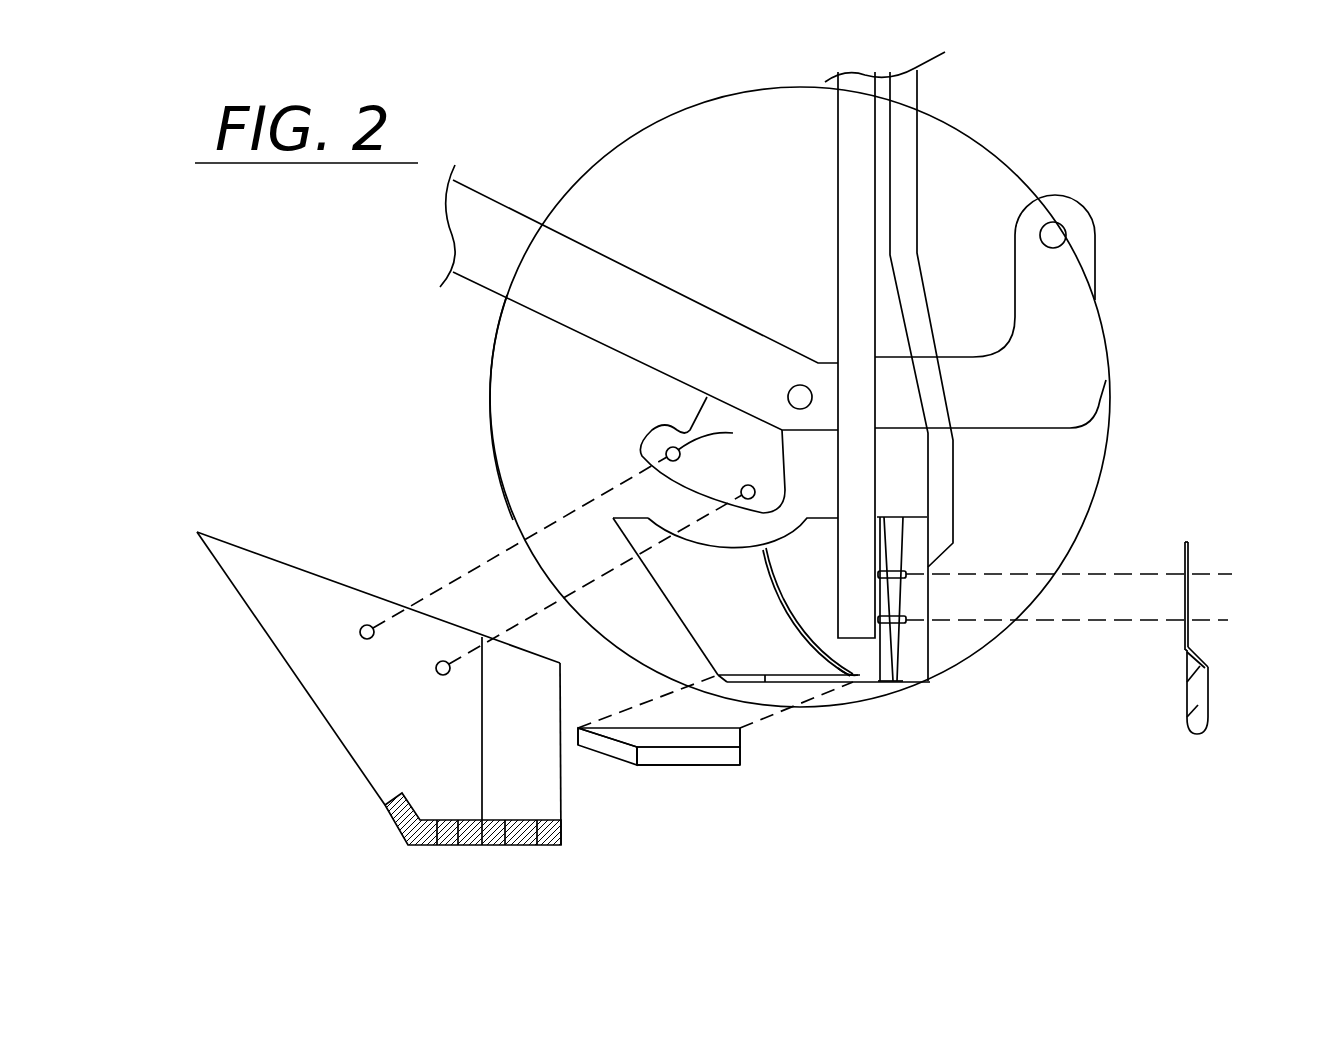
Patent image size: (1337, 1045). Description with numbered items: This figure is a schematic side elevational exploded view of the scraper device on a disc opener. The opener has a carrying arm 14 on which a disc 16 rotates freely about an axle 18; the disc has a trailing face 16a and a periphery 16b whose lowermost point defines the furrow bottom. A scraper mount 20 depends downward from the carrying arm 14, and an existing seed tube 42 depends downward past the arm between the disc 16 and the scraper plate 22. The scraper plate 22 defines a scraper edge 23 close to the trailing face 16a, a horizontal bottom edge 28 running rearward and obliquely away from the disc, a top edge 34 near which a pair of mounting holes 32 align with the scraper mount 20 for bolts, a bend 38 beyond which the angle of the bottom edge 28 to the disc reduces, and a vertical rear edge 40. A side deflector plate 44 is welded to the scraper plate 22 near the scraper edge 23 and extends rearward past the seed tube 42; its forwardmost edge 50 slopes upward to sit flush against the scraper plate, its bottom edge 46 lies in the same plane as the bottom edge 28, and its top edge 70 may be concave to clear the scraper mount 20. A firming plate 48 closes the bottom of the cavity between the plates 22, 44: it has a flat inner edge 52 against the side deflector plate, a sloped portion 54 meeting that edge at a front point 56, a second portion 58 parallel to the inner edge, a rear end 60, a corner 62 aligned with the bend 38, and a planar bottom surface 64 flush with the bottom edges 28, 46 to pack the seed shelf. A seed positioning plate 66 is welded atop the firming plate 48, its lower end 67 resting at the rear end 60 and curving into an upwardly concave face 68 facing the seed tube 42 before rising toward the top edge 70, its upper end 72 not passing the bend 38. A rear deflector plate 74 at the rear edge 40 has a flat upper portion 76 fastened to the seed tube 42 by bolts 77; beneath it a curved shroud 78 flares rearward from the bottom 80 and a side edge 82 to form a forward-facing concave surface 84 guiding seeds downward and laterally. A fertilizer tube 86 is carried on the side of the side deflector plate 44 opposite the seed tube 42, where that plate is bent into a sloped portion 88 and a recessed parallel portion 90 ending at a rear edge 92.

The carrying arm 14 is at (630, 304).
The disc 16 is at (637, 121).
The trailing face 16a is at (525, 390).
The disc periphery 16b is at (495, 480).
The axle 18 is at (792, 396).
The scraper mount 20 is at (713, 413).
The scraper plate 22 is at (306, 606).
The scraper edge 23 is at (300, 690).
The bottom edge 28 is at (467, 847).
The mounting holes 32 is at (440, 667).
The top edge 34 is at (746, 490).
The bend 38 is at (485, 760).
The rear edge 40 is at (565, 773).
The seed tube 42 is at (853, 192).
The side deflector plate 44 is at (697, 594).
The bottom edge of side deflector plate 46 is at (870, 687).
The firming plate 48 is at (694, 778).
The forwardmost edge 50 is at (630, 552).
The flat inner edge 52 is at (643, 727).
The sloped portion 54 is at (612, 748).
The point 56 is at (570, 730).
The second portion 58 is at (717, 765).
The rear end 60 is at (740, 733).
The corner 62 is at (653, 757).
The planar bottom surface 64 is at (667, 767).
The seed positioning plate 66 is at (775, 606).
The lower end 67 is at (888, 687).
The upwardly concave face 68 is at (852, 672).
The top edge of side deflector plate 70 is at (773, 537).
The upper end 72 is at (762, 532).
The rear deflector plate 74 is at (1229, 531).
The flat upper portion 76 is at (1192, 585).
The bolts 77 is at (907, 610).
The curved shroud 78 is at (1227, 683).
The bottom 80 is at (1190, 643).
The side edge 82 is at (1185, 690).
The concave surface 84 is at (1198, 717).
The fertilizer tube 86 is at (940, 480).
The sloped portion of side deflector plate 88 is at (905, 521).
The parallel portion 90 is at (915, 543).
The rear edge of side deflector plate 92 is at (930, 653).